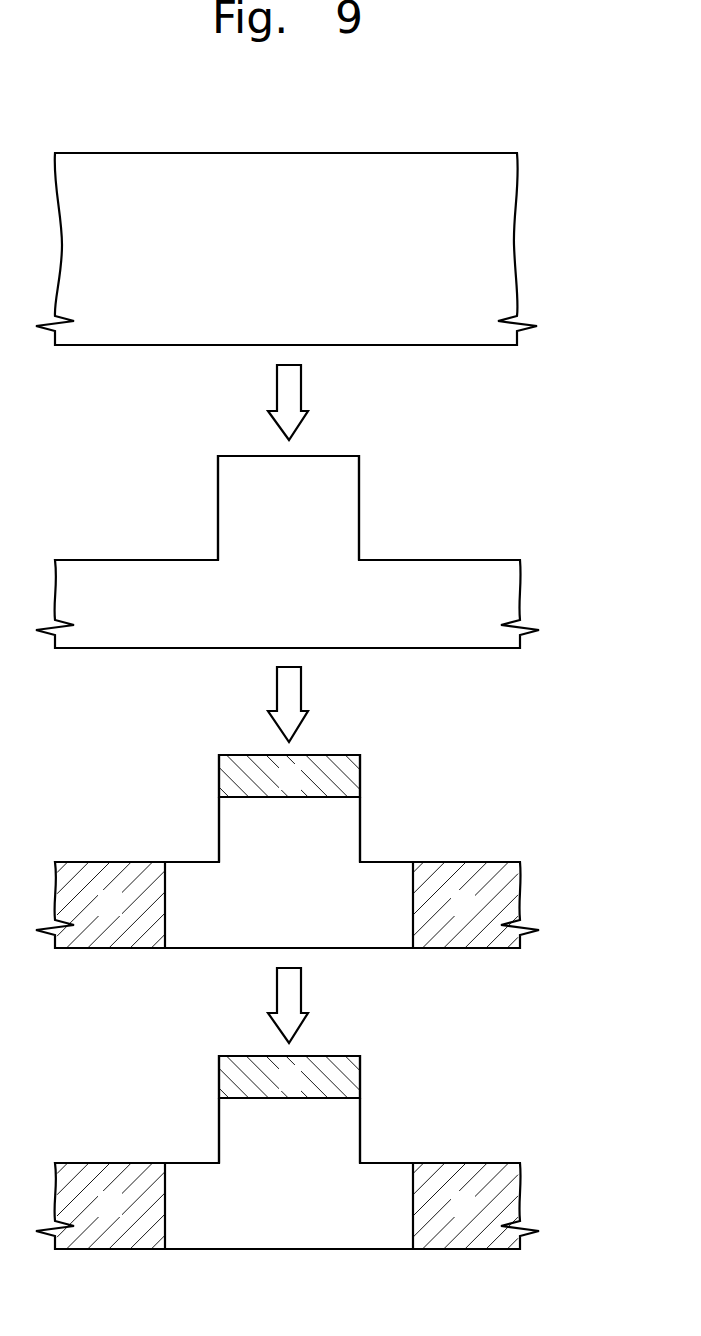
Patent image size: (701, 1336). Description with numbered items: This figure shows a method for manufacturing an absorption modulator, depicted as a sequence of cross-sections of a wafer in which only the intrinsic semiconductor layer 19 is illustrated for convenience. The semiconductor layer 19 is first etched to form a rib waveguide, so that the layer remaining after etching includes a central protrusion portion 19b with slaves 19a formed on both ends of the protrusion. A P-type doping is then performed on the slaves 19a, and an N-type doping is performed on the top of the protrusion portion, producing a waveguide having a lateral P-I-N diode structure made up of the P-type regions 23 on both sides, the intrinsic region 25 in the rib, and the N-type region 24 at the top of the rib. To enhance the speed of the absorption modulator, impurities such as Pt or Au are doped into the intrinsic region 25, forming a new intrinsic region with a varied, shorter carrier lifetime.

The intrinsic semiconductor layer 19 is at (507, 231).
The slaves 19a is at (505, 589).
The central protrusion portion 19b is at (347, 487).
The P-type region 23 is at (481, 1174).
The N-type region 24 is at (393, 1081).
The intrinsic region 25 is at (393, 1122).